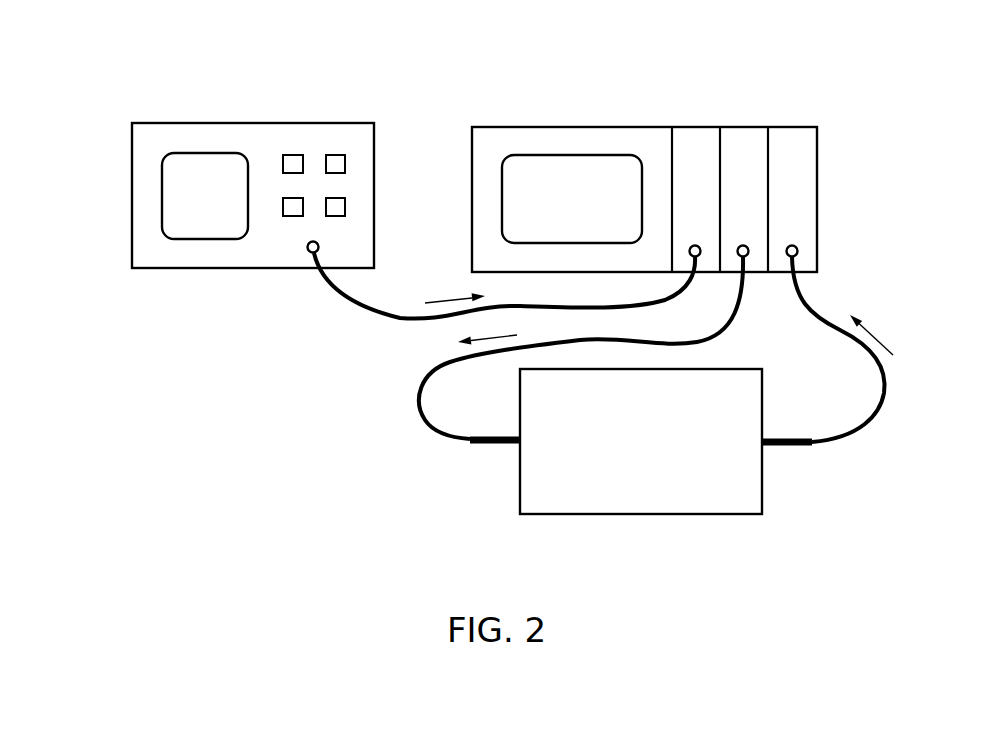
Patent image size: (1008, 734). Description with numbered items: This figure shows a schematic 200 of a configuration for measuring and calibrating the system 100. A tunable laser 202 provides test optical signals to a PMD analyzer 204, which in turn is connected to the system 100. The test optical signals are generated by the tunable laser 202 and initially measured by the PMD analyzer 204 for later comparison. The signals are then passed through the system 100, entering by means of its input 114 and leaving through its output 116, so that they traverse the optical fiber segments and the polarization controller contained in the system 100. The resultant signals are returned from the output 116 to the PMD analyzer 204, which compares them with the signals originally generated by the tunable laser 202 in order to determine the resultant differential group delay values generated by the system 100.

The schematic 200 is at (162, 50).
The tunable laser 202 is at (182, 255).
The PMD analyzer 204 is at (520, 138).
The system 100 is at (660, 448).
The input 114 is at (470, 445).
The output 116 is at (813, 446).